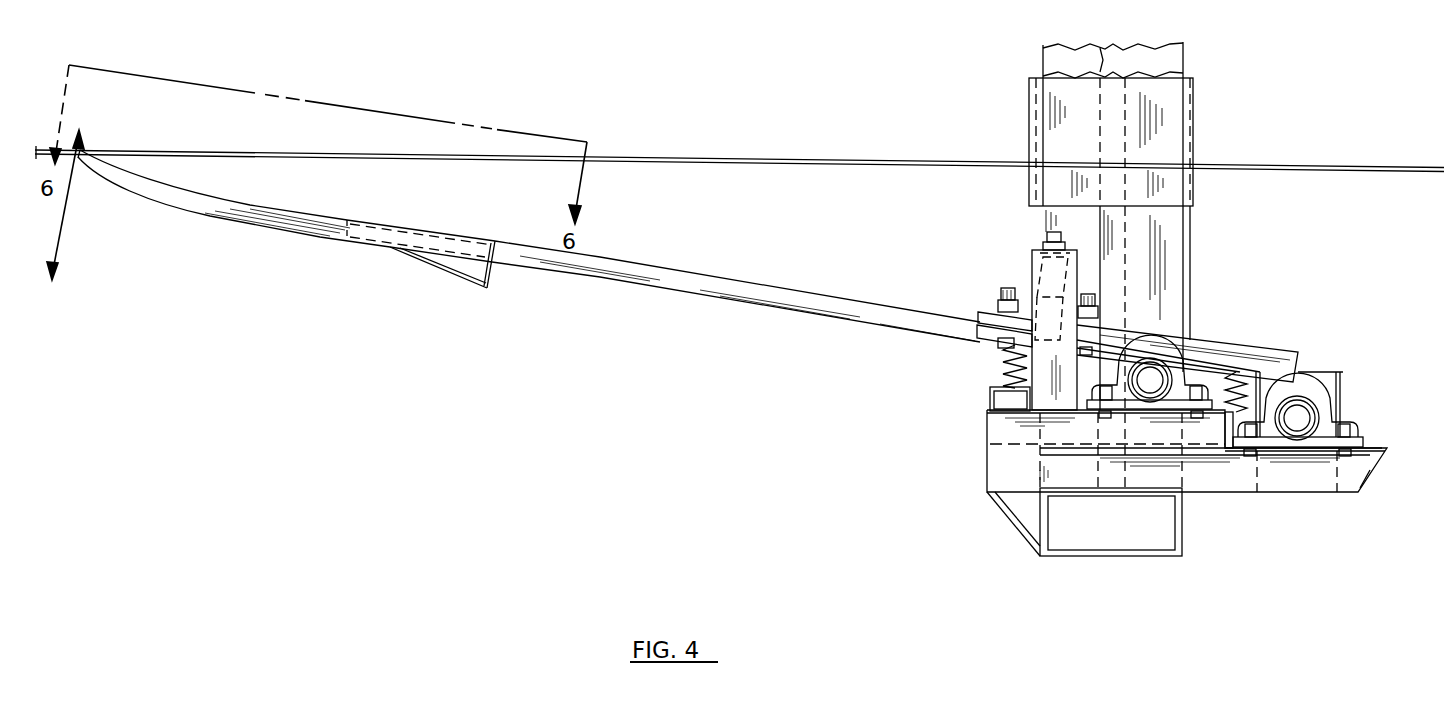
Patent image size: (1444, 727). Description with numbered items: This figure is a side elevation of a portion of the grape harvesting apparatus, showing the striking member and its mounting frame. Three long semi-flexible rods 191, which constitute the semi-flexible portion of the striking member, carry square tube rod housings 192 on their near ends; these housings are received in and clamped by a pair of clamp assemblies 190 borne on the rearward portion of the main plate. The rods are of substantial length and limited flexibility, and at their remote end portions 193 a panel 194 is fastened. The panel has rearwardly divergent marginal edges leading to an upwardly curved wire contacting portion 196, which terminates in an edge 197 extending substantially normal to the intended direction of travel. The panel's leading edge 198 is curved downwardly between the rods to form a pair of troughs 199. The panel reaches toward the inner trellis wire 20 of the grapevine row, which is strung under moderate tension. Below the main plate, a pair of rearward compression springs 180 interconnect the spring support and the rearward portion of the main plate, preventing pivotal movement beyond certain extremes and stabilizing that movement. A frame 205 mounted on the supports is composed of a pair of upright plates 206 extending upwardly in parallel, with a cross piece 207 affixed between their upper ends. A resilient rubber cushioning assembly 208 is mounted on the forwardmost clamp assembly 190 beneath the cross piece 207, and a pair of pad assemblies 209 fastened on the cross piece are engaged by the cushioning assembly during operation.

The inner trellis wire 20 is at (715, 155).
The rearward compression springs 180 is at (1006, 366).
The clamp assemblies 190 is at (1004, 290).
The semi-flexible rods 191 is at (718, 280).
The square tube rod housings 192 is at (985, 314).
The remote end portions 193 is at (381, 218).
The panel 194 is at (248, 216).
The wire contacting portion 196 is at (97, 177).
The edge 197 is at (83, 150).
The leading edge 198 is at (491, 265).
The troughs 199 is at (488, 288).
The frame 205 is at (1090, 252).
The upright plates 206 is at (1010, 384).
The cross piece 207 is at (1062, 249).
The cushioning assembly 208 is at (1046, 278).
The pad assemblies 209 is at (1040, 246).